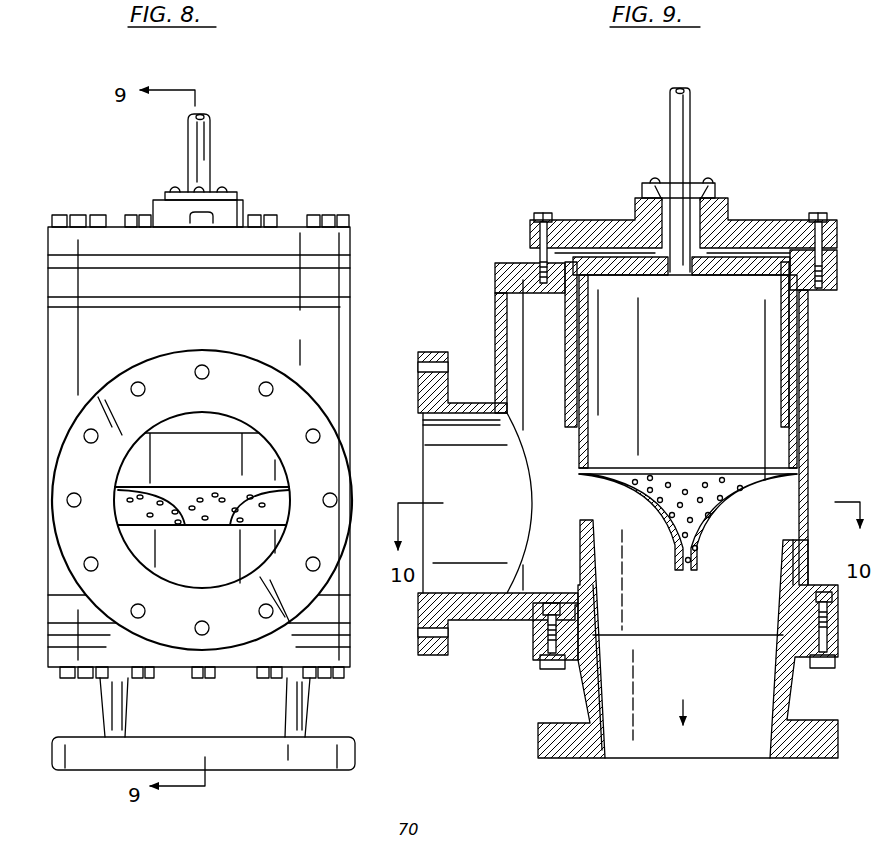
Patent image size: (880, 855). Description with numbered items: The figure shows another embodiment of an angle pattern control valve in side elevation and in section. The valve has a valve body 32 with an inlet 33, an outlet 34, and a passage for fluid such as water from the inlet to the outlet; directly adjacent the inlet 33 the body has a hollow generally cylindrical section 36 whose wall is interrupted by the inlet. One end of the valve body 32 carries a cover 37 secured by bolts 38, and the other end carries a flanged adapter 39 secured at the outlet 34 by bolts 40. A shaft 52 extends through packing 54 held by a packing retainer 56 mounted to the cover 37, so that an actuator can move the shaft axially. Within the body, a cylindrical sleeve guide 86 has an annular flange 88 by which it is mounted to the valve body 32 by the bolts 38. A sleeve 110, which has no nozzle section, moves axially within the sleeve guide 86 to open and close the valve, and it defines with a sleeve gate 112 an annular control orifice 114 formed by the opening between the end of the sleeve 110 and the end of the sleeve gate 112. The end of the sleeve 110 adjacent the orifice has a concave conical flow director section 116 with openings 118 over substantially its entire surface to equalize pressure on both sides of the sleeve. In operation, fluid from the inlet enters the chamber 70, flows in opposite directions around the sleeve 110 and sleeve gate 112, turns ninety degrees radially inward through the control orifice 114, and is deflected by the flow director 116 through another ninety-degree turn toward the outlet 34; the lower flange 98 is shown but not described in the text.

In FIG. 8, the valve body 32 is at (352, 313).
In FIG. 9, the valve body 32 is at (496, 312).
In FIG. 8, the inlet 33 is at (252, 462).
In FIG. 9, the inlet 33 is at (452, 475).
In FIG. 9, the outlet 34 is at (697, 612).
In FIG. 9, the hollow generally cylindrical section 36 is at (810, 490).
In FIG. 8, the cover 37 is at (352, 240).
In FIG. 9, the cover 37 is at (588, 222).
In FIG. 8, the bolts 38 is at (133, 215).
In FIG. 9, the bolts 38 is at (540, 213).
In FIG. 8, the flanged adapter 39 is at (305, 716).
In FIG. 9, the flanged adapter 39 is at (586, 690).
In FIG. 8, the bolts 40 is at (120, 682).
In FIG. 9, the bolts 40 is at (540, 670).
In FIG. 8, the shaft 52 is at (200, 131).
In FIG. 9, the shaft 52 is at (690, 106).
In FIG. 9, the packing 54 is at (716, 200).
In FIG. 8, the packing retainer 56 is at (235, 212).
In FIG. 9, the packing retainer 56 is at (647, 196).
In FIG. 9, the chamber 70 is at (797, 452).
In FIG. 8, the sleeve guide 86 is at (180, 416).
In FIG. 9, the sleeve guide 86 is at (565, 362).
In FIG. 8, the annular flange 88 is at (352, 262).
In FIG. 9, the annular flange 88 is at (530, 258).
In FIG. 8, the body bottom flange 98 is at (350, 630).
In FIG. 9, the body bottom flange 98 is at (535, 632).
In FIG. 8, the sleeve 110 is at (212, 440).
In FIG. 9, the sleeve 110 is at (585, 432).
In FIG. 8, the sleeve gate 112 is at (195, 576).
In FIG. 9, the sleeve gate 112 is at (586, 603).
In FIG. 8, the control orifice 114 is at (293, 493).
In FIG. 9, the control orifice 114 is at (558, 524).
In FIG. 8, the flow director section 116 is at (190, 488).
In FIG. 9, the flow director section 116 is at (622, 490).
In FIG. 8, the openings 118 is at (216, 522).
In FIG. 9, the openings 118 is at (706, 476).